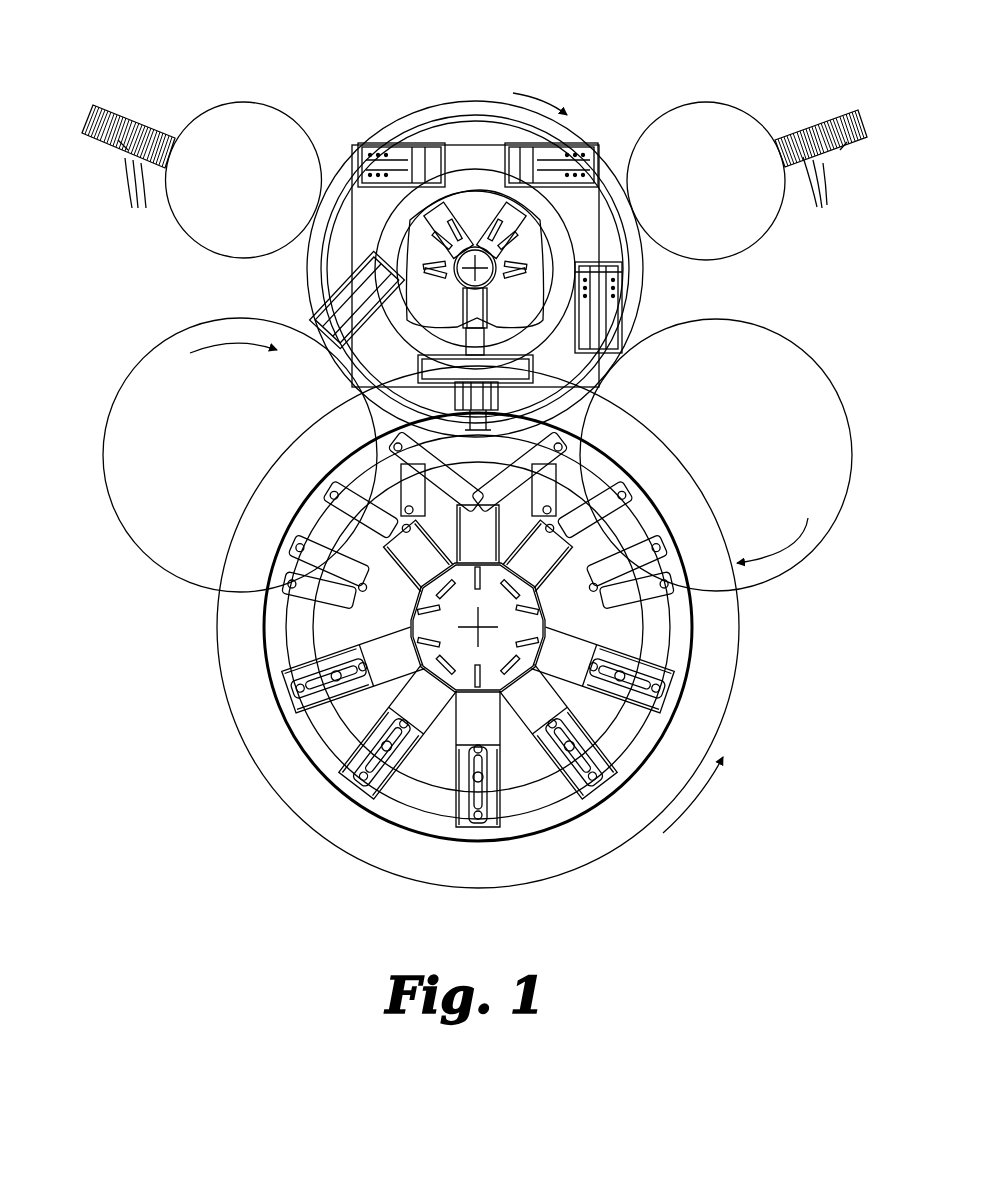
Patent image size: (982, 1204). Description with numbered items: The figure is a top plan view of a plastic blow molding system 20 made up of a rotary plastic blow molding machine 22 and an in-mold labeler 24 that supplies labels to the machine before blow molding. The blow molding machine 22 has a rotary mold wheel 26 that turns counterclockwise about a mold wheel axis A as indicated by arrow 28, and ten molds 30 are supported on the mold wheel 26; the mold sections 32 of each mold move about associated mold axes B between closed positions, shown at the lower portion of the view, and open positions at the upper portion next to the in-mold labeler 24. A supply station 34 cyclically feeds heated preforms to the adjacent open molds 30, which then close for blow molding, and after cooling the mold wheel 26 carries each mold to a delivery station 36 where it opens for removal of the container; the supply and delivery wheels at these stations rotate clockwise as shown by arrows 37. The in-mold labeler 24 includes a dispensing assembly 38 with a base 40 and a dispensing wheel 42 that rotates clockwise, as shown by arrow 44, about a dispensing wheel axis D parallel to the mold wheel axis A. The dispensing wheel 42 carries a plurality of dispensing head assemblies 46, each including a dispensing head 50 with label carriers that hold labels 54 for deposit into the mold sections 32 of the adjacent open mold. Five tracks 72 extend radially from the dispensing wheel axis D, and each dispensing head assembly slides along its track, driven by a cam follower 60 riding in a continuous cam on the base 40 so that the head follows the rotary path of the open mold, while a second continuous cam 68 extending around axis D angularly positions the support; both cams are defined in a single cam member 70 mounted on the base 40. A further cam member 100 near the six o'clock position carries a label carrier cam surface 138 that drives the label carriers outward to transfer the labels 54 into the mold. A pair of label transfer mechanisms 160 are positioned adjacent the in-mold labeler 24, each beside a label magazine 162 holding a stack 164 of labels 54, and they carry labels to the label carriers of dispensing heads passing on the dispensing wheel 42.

The plastic blow molding system 20 is at (163, 657).
The rotary plastic blow molding machine 22 is at (697, 660).
The in-mold labeler 24 is at (655, 282).
The rotary mold wheel 26 is at (540, 845).
The arrow 28 is at (695, 785).
The molds 30 is at (445, 402).
The mold sections 32 is at (332, 493).
The supply station 34 is at (138, 360).
The delivery station 36 is at (829, 549).
The arrows 37 is at (228, 340).
The dispensing assembly 38 is at (585, 125).
The base 40 is at (490, 95).
The dispensing wheel 42 is at (475, 245).
The arrow 44 is at (543, 94).
The dispensing head assemblies 46 is at (418, 133).
The dispensing head 50 is at (560, 460).
The labels 54 is at (479, 194).
The cam follower 60 is at (360, 252).
The continuous cam 68 is at (575, 348).
The cam member 70 is at (355, 200).
The tracks 72 is at (428, 246).
The cam member 100 is at (518, 377).
The label carrier cam surface 138 is at (498, 392).
The label transfer mechanisms 160 is at (275, 105).
The label magazine 162 is at (122, 122).
The stack 164 is at (120, 142).
The mold wheel axis A is at (300, 773).
The mold axes B is at (452, 654).
The dispensing wheel axis D is at (470, 250).